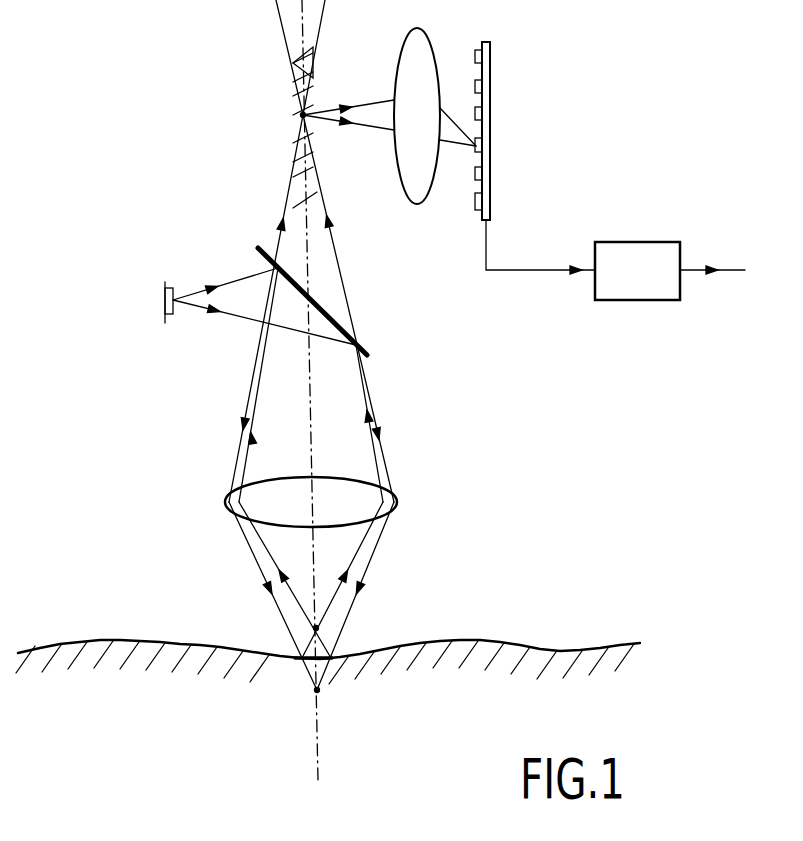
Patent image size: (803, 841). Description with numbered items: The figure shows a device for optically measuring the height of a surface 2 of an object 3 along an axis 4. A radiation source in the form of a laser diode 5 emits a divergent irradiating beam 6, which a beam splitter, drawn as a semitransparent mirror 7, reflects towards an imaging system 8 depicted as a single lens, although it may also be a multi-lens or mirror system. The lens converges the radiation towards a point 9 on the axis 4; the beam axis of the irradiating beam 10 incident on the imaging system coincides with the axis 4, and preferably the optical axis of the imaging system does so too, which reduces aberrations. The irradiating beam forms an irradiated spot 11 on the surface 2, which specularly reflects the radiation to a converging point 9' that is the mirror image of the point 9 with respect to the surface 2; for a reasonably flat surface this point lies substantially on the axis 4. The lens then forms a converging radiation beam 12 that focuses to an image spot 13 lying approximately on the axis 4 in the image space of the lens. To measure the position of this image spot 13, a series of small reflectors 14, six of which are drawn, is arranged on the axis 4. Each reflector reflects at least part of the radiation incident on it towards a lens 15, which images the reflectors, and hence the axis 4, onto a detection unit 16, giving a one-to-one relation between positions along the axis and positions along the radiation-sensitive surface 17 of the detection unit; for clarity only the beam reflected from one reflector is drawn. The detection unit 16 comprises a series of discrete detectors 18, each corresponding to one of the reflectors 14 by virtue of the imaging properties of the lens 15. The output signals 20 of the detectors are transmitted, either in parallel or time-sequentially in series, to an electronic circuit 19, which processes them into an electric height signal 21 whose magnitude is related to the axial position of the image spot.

The surface 2 is at (56, 652).
The object 3 is at (90, 724).
The axis 4 is at (319, 752).
The laser diode 5 is at (163, 292).
The irradiating beam 6 is at (233, 283).
The semitransparent mirror 7 is at (365, 352).
The imaging system 8 is at (398, 502).
The point 9 is at (311, 619).
The converging point 9' is at (311, 580).
The irradiating beam 10 is at (377, 418).
The irradiated spot 11 is at (322, 665).
The converging radiation beam 12 is at (338, 266).
The image spot 13 is at (303, 115).
The reflectors 14 is at (293, 53).
The lens 15 is at (398, 38).
The detection unit 16 is at (490, 44).
The radiation-sensitive surface 17 is at (476, 55).
The discrete detectors 18 is at (490, 87).
The electronic circuit 19 is at (660, 242).
The output signals 20 is at (488, 252).
The electric height signal 21 is at (720, 270).